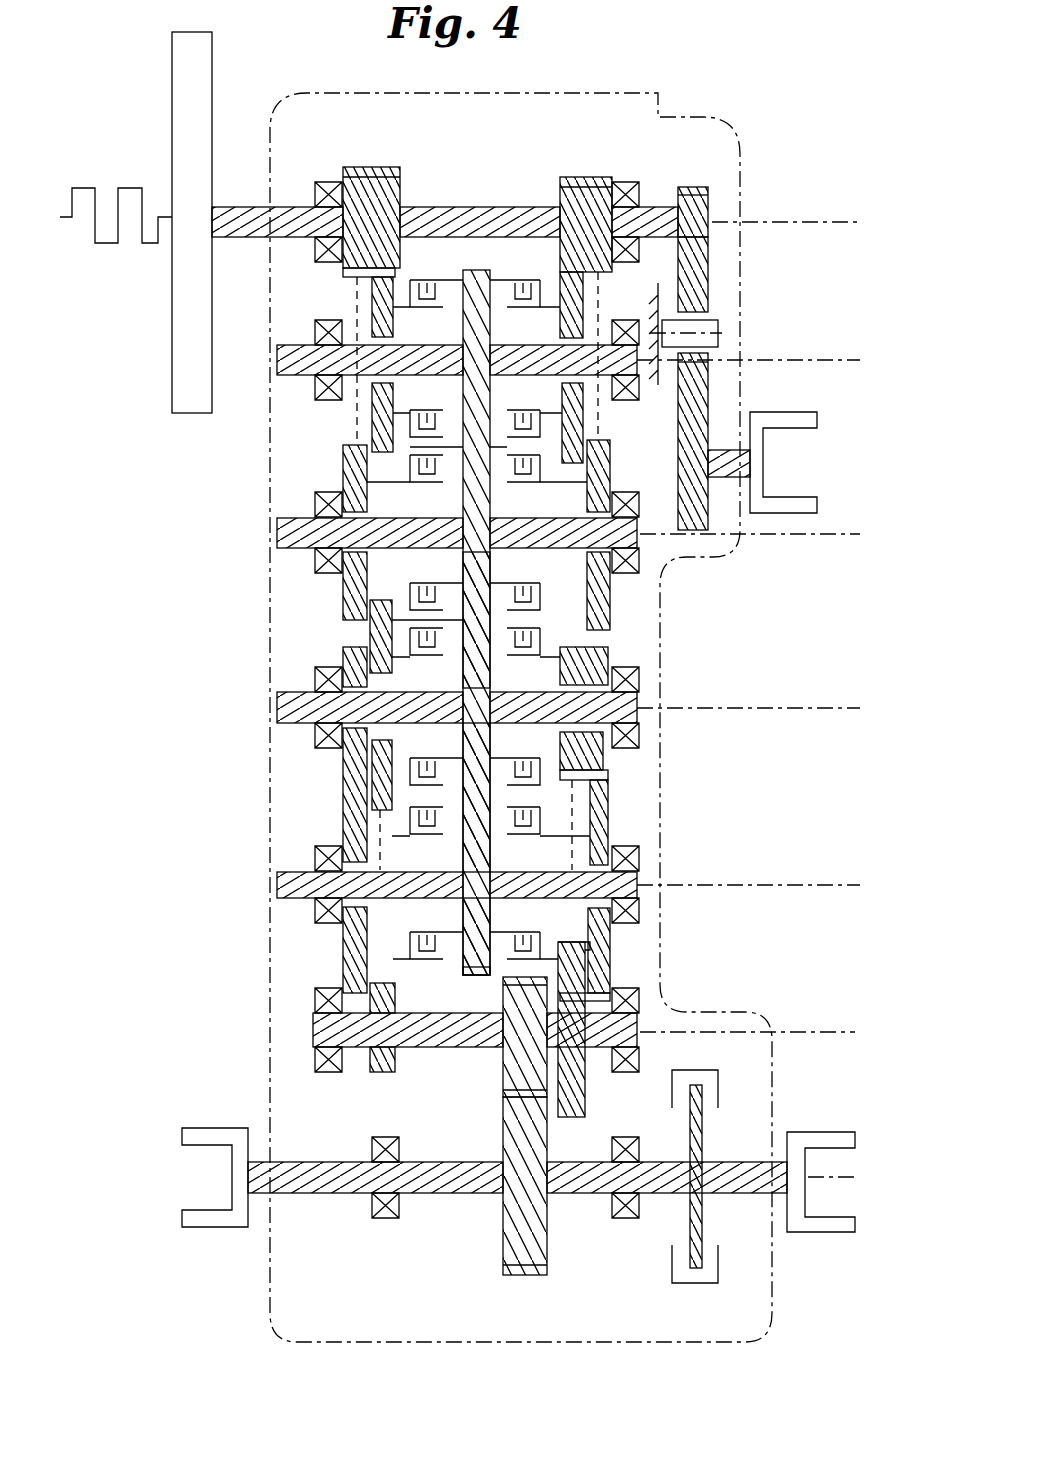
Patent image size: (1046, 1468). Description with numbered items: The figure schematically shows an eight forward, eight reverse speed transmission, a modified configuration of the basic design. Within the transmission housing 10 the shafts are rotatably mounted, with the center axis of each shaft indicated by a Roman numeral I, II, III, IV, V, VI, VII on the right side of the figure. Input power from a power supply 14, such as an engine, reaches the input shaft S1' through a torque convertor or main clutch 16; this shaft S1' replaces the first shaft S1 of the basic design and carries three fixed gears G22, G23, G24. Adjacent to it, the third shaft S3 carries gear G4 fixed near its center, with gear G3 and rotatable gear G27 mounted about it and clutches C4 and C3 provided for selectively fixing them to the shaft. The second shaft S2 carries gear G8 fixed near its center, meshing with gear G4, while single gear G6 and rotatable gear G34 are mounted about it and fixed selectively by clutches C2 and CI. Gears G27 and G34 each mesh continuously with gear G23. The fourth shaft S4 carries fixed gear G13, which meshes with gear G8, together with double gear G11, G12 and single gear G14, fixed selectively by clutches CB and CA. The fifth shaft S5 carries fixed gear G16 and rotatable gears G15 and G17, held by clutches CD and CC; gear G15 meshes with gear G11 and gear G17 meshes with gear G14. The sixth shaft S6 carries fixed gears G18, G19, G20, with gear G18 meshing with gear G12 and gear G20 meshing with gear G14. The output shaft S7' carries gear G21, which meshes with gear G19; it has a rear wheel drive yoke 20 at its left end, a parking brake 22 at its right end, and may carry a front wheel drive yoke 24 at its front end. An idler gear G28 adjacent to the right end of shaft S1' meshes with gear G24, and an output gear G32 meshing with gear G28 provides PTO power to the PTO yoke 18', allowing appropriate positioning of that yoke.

The transmission housing 10 is at (760, 92).
The power supply 14 is at (128, 188).
The torque convertor or main clutch 16 is at (172, 68).
The shaft S1' is at (445, 196).
The first shaft S1 is at (716, 334).
The second shaft S2 is at (277, 535).
The third shaft S3 is at (277, 360).
The fourth shaft S4 is at (277, 706).
The fifth shaft S5 is at (277, 890).
The sixth shaft S6 is at (313, 1030).
The output shaft S7' is at (517, 1206).
The gear G3 is at (372, 303).
The gear G4 is at (490, 330).
The single gear G6 is at (342, 460).
The gear G8 is at (463, 572).
The double gear G11 is at (343, 655).
The double gear G12 is at (370, 637).
The gear G13 is at (463, 745).
The single gear G14 is at (608, 660).
The gear G15 is at (343, 810).
The gear G16 is at (463, 915).
The gear G17 is at (608, 805).
The gear G18 is at (395, 1073).
The gear G19 is at (503, 1068).
The gear G20 is at (585, 1082).
The gear G21 is at (503, 1258).
The fixed gear G22 is at (395, 168).
The fixed gear G23 is at (602, 177).
The fixed gear G24 is at (702, 187).
The rotatable gear G27 is at (562, 406).
The idler gear G28 is at (712, 282).
The output gear G32 is at (712, 412).
The rotatable gear G34 is at (612, 468).
The clutch C2 is at (417, 483).
The clutch C3 is at (532, 280).
The clutch C4 is at (445, 280).
The clutch CI is at (520, 485).
The clutch CA is at (535, 660).
The clutch CB is at (443, 660).
The clutch CC is at (540, 840).
The clutch CD is at (436, 840).
The PTO yoke 18' is at (801, 462).
The rear wheel drive yoke 20 is at (228, 1128).
The parking brake 22 is at (690, 1283).
The front wheel drive yoke 24 is at (850, 1135).
The center axis of first shaft I is at (799, 231).
The center axis of second shaft II is at (768, 539).
The center axis of third shaft III is at (773, 366).
The center axis of fourth shaft IV is at (771, 711).
The center axis of fifth shaft V is at (767, 891).
The center axis of sixth shaft VI is at (770, 1036).
The center axis of seventh shaft VII is at (860, 1181).